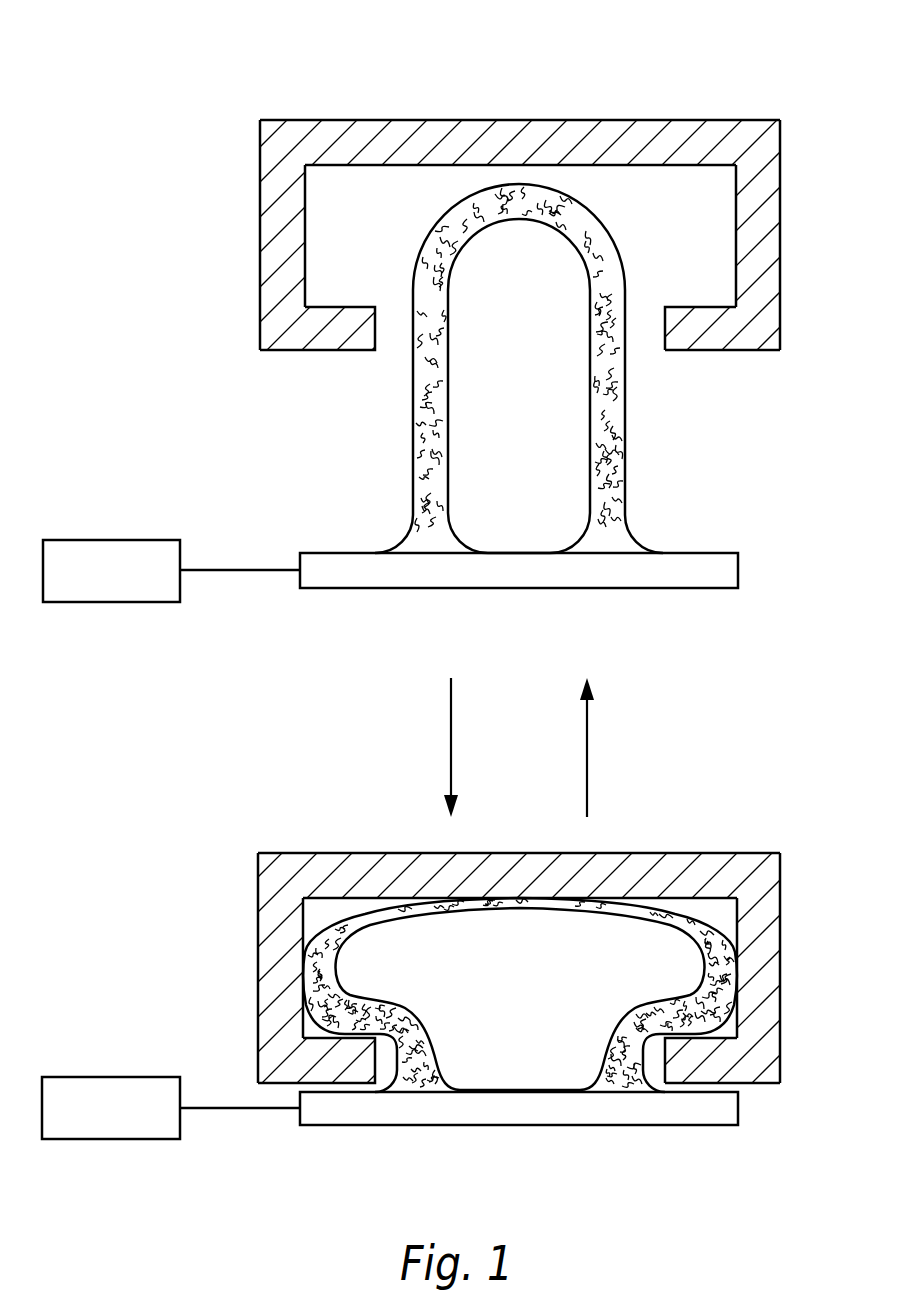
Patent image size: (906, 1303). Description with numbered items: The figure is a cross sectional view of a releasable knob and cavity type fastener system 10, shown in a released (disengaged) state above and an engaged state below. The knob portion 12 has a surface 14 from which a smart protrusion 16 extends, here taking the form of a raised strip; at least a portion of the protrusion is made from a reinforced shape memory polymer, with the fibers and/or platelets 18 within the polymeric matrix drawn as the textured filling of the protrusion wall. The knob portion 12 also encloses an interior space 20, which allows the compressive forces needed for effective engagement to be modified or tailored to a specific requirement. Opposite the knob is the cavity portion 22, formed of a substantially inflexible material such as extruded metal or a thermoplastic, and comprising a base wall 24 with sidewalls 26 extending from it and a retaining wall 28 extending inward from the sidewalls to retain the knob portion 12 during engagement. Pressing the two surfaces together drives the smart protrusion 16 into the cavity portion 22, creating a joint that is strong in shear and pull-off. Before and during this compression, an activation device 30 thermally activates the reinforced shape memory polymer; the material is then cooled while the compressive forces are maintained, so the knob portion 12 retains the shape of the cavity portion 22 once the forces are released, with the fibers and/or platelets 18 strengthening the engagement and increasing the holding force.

The knob and cavity type fastener system 10 is at (185, 50).
The knob portion 12 is at (380, 456).
The surface 14 is at (705, 553).
The smart protrusion 16 is at (625, 369).
The fibers and/or platelets 18 is at (618, 440).
The interior space 20 is at (505, 400).
The cavity portion 22 is at (228, 192).
The base wall 24 is at (443, 118).
The sidewalls 26 is at (257, 262).
The retaining wall 28 is at (338, 305).
The activation device 30 is at (98, 538).